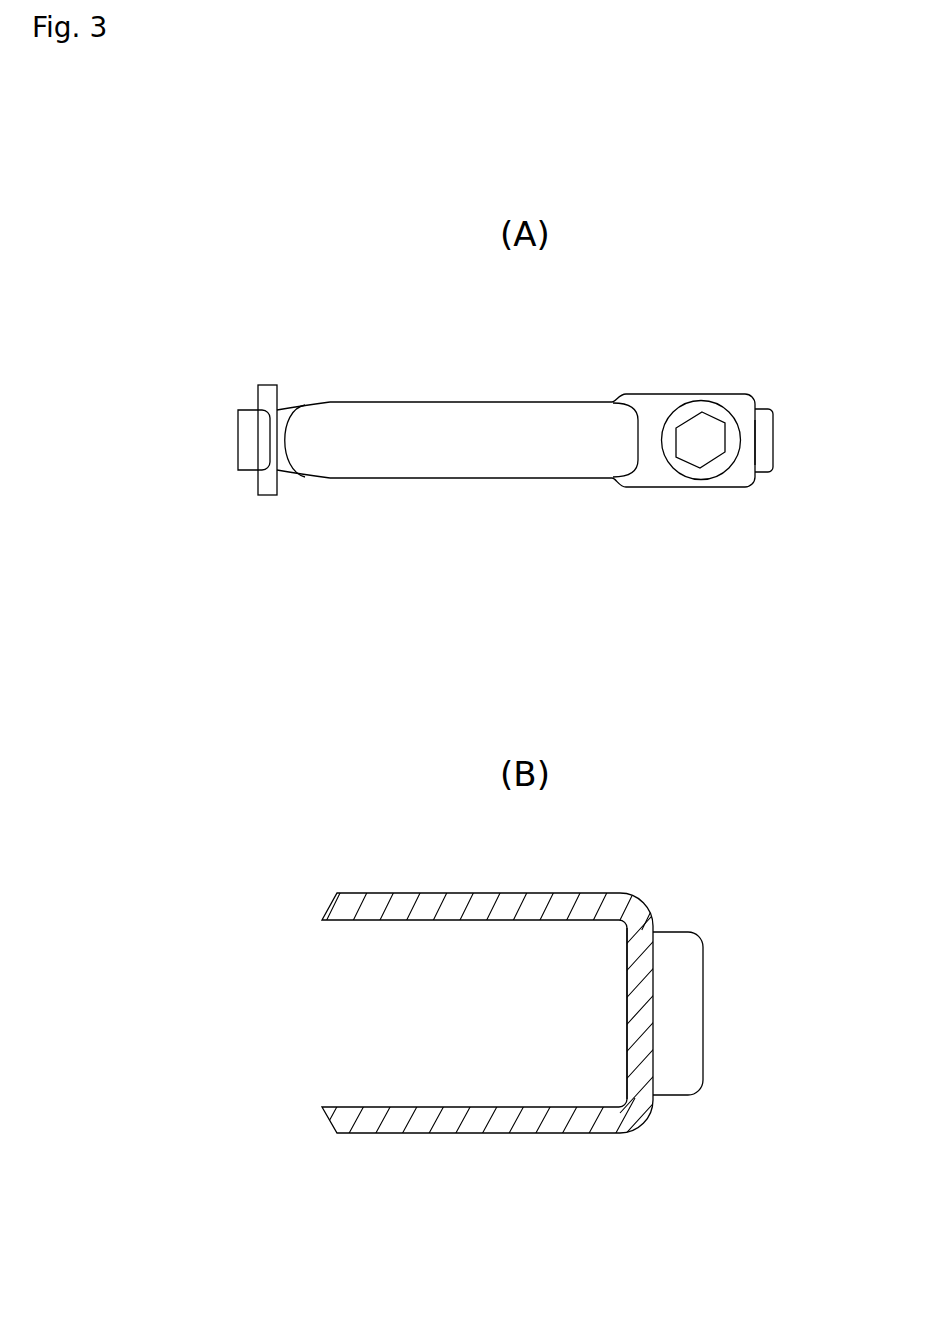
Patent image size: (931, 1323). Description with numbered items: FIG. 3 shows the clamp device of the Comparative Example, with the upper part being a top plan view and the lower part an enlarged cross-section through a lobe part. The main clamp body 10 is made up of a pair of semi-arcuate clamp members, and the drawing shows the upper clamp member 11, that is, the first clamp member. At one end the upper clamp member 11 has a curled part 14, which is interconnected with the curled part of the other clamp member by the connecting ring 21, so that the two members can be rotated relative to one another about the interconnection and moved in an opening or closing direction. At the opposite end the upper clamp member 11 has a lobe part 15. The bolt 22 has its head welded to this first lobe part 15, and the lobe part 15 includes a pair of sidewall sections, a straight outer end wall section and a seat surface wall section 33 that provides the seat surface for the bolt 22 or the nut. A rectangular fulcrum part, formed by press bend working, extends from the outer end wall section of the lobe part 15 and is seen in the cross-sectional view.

The main clamp body 10 is at (444, 400).
The upper clamp member 11 is at (458, 427).
The curled part 14 is at (253, 442).
The lobe part 15 is at (662, 478).
The connecting ring 21 is at (268, 393).
The bolt 22 is at (697, 437).
The seat surface wall section 33 is at (658, 408).